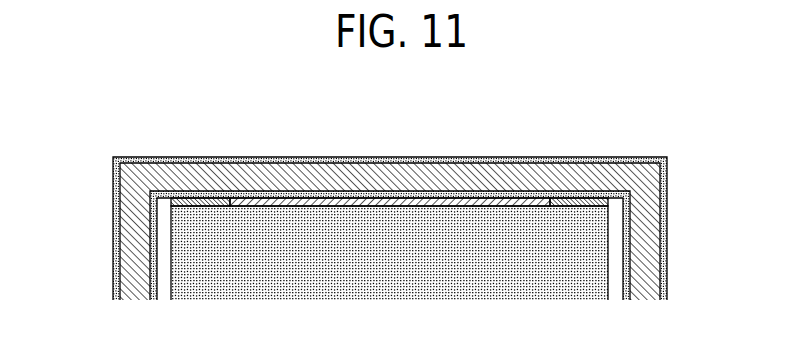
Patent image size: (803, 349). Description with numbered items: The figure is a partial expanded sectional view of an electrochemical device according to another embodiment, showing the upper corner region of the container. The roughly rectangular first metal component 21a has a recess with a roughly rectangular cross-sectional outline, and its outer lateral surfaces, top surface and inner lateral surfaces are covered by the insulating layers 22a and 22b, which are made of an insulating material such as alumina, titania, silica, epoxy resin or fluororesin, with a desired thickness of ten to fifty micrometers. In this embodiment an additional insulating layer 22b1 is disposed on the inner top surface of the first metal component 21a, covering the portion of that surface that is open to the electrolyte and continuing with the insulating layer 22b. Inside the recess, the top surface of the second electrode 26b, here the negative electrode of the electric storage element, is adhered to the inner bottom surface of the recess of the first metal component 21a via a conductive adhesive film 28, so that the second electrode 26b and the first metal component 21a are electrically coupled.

The first metal component 21a is at (128, 185).
The insulating layer 22a is at (115, 235).
The insulating layer 22b is at (150, 267).
The insulating layer 22b1 is at (203, 202).
The conductive adhesive film 28 is at (383, 202).
The second electrode 26b is at (583, 260).